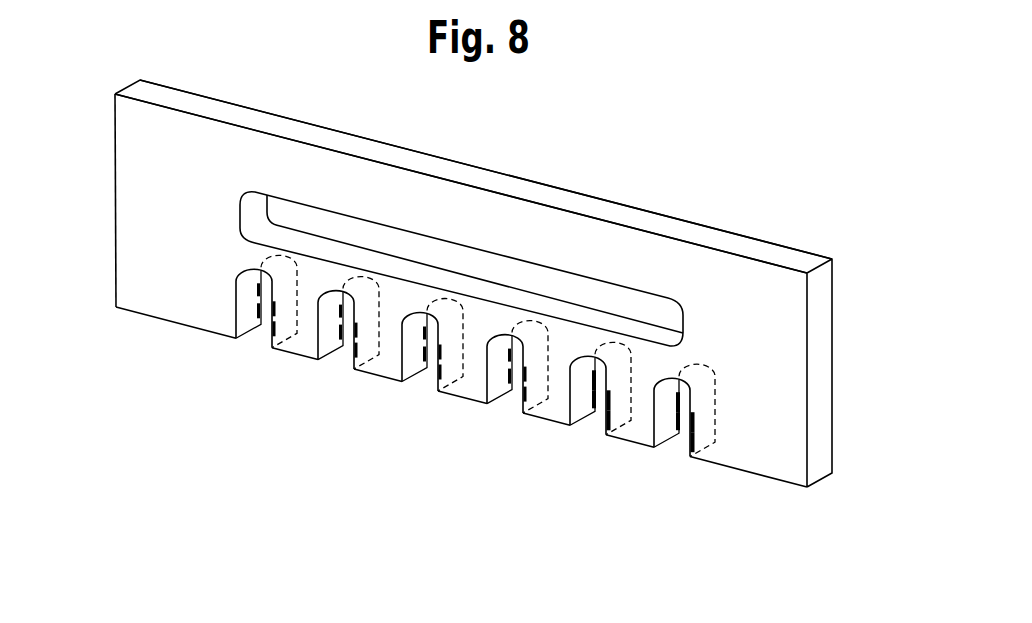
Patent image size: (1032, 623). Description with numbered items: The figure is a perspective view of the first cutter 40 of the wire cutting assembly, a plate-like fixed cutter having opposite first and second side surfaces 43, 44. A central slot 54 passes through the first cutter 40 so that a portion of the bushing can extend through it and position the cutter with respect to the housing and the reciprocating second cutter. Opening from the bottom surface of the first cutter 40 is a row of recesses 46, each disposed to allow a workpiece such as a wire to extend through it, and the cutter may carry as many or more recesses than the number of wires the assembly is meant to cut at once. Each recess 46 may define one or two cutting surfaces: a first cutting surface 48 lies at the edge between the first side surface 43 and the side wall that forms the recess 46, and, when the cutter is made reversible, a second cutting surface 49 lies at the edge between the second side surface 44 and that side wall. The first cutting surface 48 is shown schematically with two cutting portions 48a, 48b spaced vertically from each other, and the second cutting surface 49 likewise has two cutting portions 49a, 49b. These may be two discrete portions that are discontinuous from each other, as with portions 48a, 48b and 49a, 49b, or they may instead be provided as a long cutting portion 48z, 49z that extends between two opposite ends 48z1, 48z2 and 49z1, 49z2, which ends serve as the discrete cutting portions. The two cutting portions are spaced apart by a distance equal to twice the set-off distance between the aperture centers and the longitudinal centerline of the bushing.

The first cutter 40 is at (693, 270).
The first side surface 43 is at (137, 188).
The second side surface 44 is at (329, 128).
The central slot 54 is at (427, 245).
The recess 46 is at (265, 335).
The first cutting surface 48 is at (238, 338).
The first cutting portion of first cutting surface 48a is at (273, 338).
The second cutting portion of first cutting surface 48b is at (294, 345).
The second cutting surface 49 is at (343, 294).
The first cutting portion of second cutting surface 49a is at (342, 350).
The second cutting portion of second cutting surface 49b is at (330, 332).
The long cutting portion 48z is at (595, 383).
The first end of long cutting portion 48z1 is at (604, 415).
The second end of long cutting portion 48z2 is at (607, 413).
The long cutting portion of second cutting surface 49z is at (682, 403).
The first end of long cutting portion of second cutting surface 49z1 is at (587, 420).
The second end of long cutting portion of second cutting surface 49z2 is at (557, 427).